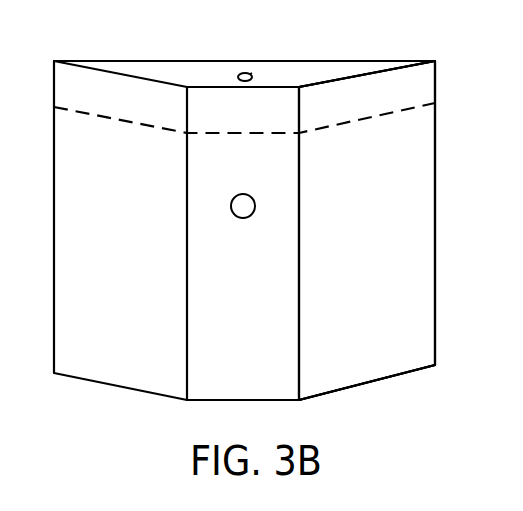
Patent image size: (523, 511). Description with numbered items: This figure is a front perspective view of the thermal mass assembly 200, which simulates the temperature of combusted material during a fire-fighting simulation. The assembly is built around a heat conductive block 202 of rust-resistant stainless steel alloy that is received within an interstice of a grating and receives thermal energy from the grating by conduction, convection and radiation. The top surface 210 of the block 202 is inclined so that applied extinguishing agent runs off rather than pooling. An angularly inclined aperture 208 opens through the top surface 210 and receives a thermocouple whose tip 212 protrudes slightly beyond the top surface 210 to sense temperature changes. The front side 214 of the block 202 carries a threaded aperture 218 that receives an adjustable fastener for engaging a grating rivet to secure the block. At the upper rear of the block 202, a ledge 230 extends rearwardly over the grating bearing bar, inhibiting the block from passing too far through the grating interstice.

The thermal mass assembly 200 is at (35, 67).
The heat conductive block 202 is at (402, 267).
The aperture 208 is at (238, 77).
The top surface 210 is at (357, 67).
The tip of the thermocouple 212 is at (252, 73).
The front side 214 is at (262, 368).
The aperture 218 is at (245, 218).
The ledge 230 is at (232, 134).